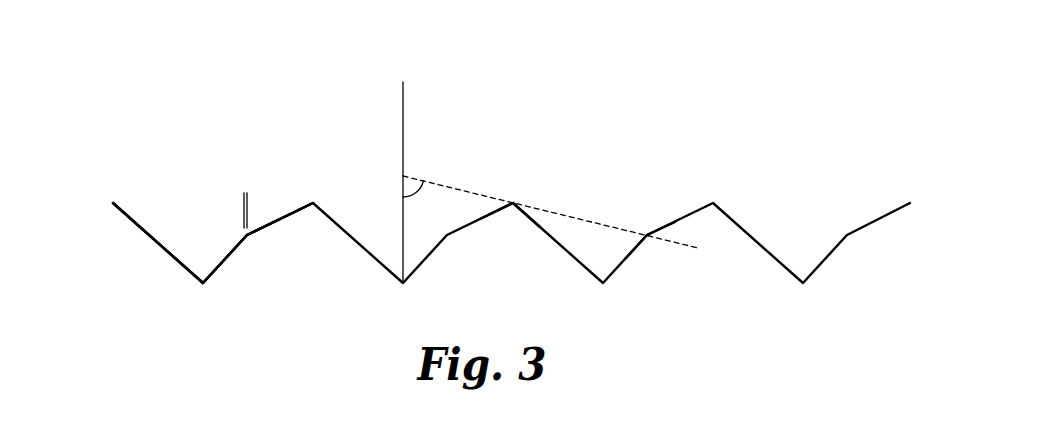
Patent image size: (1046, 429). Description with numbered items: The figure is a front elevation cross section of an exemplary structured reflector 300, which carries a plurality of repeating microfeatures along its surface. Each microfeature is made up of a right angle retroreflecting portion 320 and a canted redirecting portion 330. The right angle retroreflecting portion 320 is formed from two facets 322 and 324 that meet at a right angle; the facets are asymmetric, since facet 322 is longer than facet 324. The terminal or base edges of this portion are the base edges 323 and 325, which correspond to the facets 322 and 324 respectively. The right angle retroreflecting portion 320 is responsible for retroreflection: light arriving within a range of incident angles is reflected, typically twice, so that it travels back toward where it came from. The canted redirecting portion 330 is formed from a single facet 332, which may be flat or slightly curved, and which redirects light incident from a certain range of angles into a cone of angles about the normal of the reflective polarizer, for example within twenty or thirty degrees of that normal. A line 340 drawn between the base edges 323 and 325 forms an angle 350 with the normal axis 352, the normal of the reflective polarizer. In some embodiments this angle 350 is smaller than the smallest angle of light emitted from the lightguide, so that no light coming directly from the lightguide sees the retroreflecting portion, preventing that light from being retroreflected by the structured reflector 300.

The structured reflector 300 is at (790, 132).
The right angle retroreflecting portion 320 is at (118, 195).
The facet 322 is at (152, 240).
The base edge 323 is at (512, 206).
The facet 324 is at (223, 265).
The base edge 325 is at (650, 239).
The canted redirecting portion 330 is at (247, 193).
The facet 332 is at (290, 217).
The line 340 is at (580, 218).
The angle 350 is at (420, 197).
The normal axis 352 is at (404, 102).